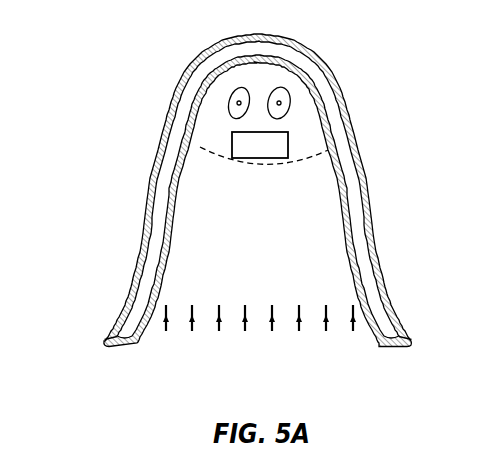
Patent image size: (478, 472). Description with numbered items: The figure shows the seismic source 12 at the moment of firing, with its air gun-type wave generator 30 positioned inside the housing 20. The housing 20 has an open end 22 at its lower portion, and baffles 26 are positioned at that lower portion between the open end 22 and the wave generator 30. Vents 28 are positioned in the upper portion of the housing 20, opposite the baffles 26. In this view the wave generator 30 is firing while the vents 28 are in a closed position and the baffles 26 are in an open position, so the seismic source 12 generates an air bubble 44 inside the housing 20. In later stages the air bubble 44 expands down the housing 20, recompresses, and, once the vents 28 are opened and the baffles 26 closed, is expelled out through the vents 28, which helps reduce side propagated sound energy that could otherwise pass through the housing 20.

The seismic source 12 is at (153, 66).
The housing 20 is at (165, 122).
The open end 22 is at (195, 372).
The baffles 26 is at (325, 327).
The vents 28 is at (279, 88).
The wave generator 30 is at (232, 143).
The air bubble 44 is at (272, 165).